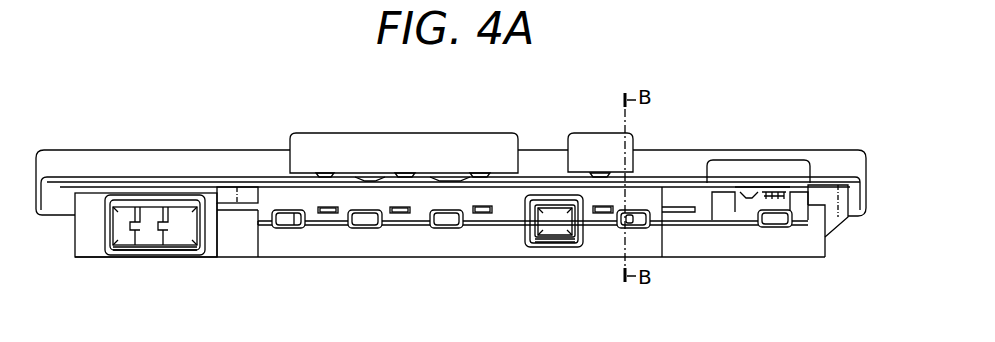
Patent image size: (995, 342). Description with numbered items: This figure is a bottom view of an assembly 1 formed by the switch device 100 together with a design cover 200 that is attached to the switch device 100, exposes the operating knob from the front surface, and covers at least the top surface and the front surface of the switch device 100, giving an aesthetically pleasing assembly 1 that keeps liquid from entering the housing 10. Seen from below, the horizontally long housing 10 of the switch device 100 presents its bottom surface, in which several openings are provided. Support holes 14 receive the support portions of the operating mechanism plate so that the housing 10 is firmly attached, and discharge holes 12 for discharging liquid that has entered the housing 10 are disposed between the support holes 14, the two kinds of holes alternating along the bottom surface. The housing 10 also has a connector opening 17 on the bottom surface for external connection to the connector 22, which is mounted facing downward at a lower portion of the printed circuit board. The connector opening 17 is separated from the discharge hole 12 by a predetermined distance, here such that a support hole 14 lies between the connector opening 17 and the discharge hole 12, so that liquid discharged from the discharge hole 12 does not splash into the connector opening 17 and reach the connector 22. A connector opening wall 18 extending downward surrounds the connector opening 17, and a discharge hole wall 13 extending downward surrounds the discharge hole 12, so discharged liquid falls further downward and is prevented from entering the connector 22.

The assembly 1 is at (162, 69).
The housing 10 is at (262, 190).
The discharge hole 12 is at (290, 226).
The discharge hole wall 13 is at (275, 230).
The support hole 14 is at (328, 215).
The connector opening 17 is at (152, 225).
The connector opening wall 18 is at (107, 252).
The connector 22 is at (180, 212).
The switch device 100 is at (402, 256).
The design cover 200 is at (67, 158).